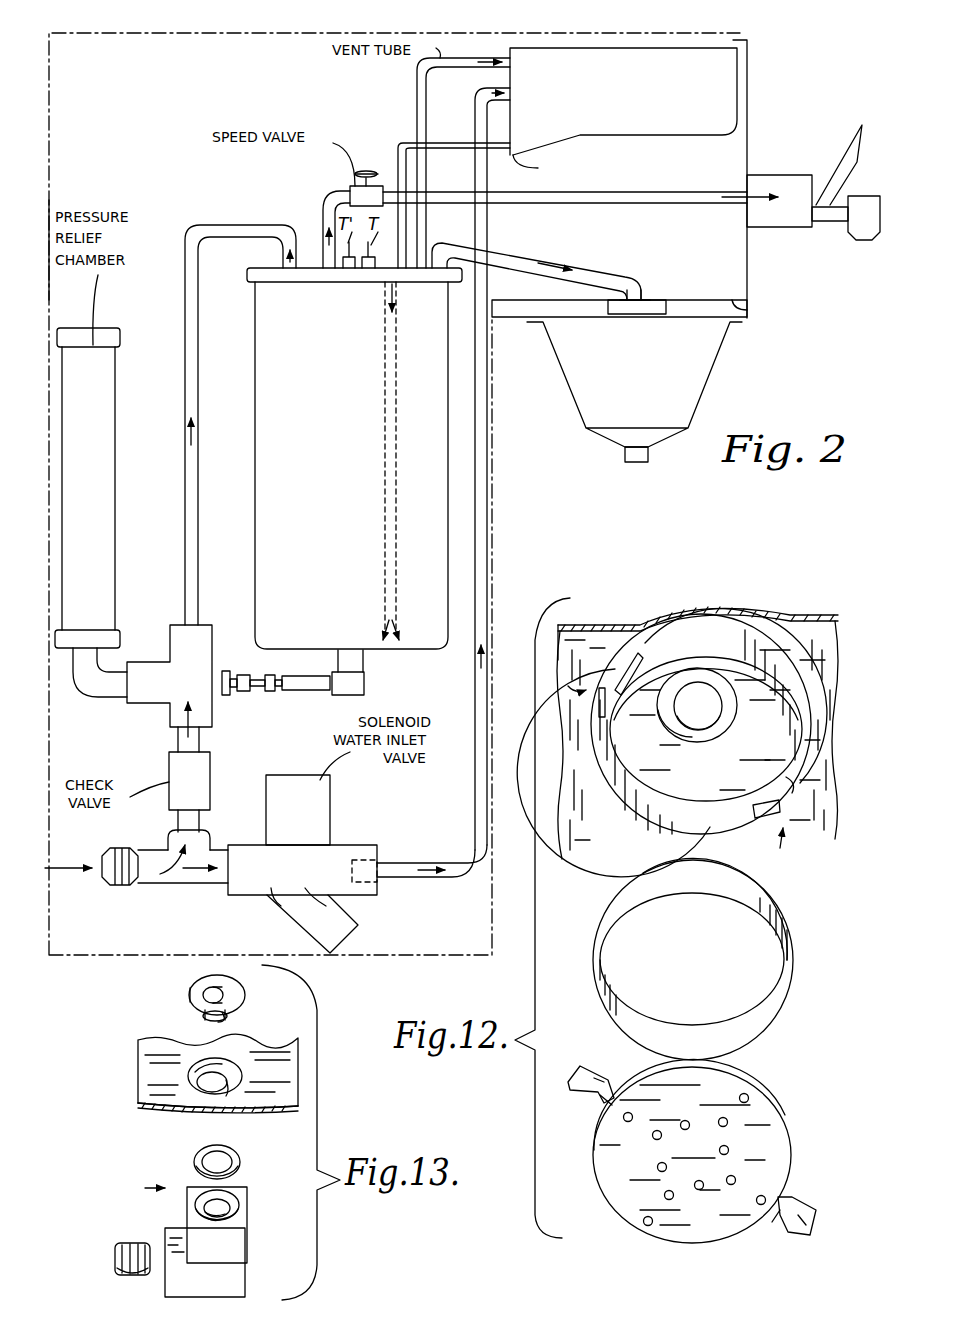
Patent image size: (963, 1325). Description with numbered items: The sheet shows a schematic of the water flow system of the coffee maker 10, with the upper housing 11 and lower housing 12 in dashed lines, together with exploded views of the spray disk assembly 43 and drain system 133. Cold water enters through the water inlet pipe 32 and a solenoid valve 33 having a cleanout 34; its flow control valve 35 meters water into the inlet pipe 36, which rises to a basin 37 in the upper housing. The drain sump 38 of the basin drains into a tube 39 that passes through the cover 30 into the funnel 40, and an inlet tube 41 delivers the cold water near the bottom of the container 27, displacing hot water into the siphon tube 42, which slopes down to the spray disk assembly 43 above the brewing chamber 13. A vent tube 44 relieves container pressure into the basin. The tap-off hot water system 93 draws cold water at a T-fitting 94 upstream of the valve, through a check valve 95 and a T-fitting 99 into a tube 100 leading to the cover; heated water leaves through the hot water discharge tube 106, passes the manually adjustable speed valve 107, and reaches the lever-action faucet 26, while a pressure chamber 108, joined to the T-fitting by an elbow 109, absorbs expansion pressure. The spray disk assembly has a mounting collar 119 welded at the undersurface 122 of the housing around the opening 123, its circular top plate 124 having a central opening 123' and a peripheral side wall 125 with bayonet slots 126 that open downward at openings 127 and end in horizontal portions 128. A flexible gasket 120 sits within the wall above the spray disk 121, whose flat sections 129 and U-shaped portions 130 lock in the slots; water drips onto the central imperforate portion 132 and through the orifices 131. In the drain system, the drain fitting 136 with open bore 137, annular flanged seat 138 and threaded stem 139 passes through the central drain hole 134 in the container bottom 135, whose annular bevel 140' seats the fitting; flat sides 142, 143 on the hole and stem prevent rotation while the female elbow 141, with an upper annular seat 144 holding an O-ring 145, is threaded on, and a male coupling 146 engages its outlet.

In FIG. 2, the coffee maker 10 is at (758, 118).
In FIG. 2, the upper housing 11 is at (49, 250).
In FIG. 12, the upper housing 11 is at (598, 624).
In FIG. 2, the lower housing 12 is at (496, 558).
In FIG. 2, the brewing chamber 13 is at (700, 380).
In FIG. 2, the lever-action faucet 26 is at (793, 175).
In FIG. 2, the hot water container 27 is at (326, 421).
In FIG. 13, the hot water container 27 is at (150, 1108).
In FIG. 2, the cover 30 is at (277, 282).
In FIG. 2, the water inlet pipe 32 is at (122, 887).
In FIG. 2, the solenoid valve 33 is at (330, 798).
In FIG. 2, the cleanout 34 is at (352, 920).
In FIG. 2, the internal flow control valve 35 is at (365, 858).
In FIG. 2, the inlet pipe 36 is at (488, 466).
In FIG. 2, the basin 37 is at (610, 46).
In FIG. 2, the drain sump 38 is at (530, 162).
In FIG. 2, the tube 39 is at (447, 141).
In FIG. 2, the funnel 40 is at (385, 290).
In FIG. 2, the inlet tube 41 is at (385, 548).
In FIG. 2, the siphon tube 42 is at (556, 262).
In FIG. 2, the spray disk assembly 43 is at (670, 296).
In FIG. 12, the spray disk assembly 43 is at (686, 590).
In FIG. 2, the vent tube 44 is at (417, 88).
In FIG. 2, the tap-off hot water system 93 is at (303, 200).
In FIG. 2, the T-fitting 94 is at (169, 838).
In FIG. 2, the check valve 95 is at (169, 765).
In FIG. 2, the T-fitting 99 is at (178, 632).
In FIG. 2, the tube 100 is at (185, 284).
In FIG. 2, the hot water discharge tube 106 is at (343, 198).
In FIG. 2, the speed valve 107 is at (368, 172).
In FIG. 2, the pressure chamber 108 is at (107, 465).
In FIG. 2, the elbow 109 is at (97, 688).
In FIG. 2, the mounting collar 119 is at (615, 313).
In FIG. 12, the mounting collar 119 is at (708, 628).
In FIG. 12, the flexible gasket 120 is at (796, 971).
In FIG. 12, the spray disk 121 is at (775, 1107).
In FIG. 2, the undersurface 122 is at (750, 308).
In FIG. 12, the undersurface 122 is at (808, 632).
In FIG. 2, the opening 123 is at (654, 272).
In FIG. 12, the opening 123 is at (682, 711).
In FIG. 12, the central opening 123' is at (705, 729).
In FIG. 12, the circular top plate 124 is at (775, 752).
In FIG. 12, the peripheral side wall 125 is at (790, 686).
In FIG. 12, the bayonet slots 126 is at (688, 763).
In FIG. 12, the downward openings 127 is at (609, 708).
In FIG. 12, the horizontal portions 128 is at (630, 664).
In FIG. 12, the flat sections 129 is at (608, 1110).
In FIG. 12, the U-shaped portions 130 is at (580, 1066).
In FIG. 12, the orifices 131 is at (640, 1170).
In FIG. 12, the central imperforate portion 132 is at (693, 1150).
In FIG. 2, the drain system 133 is at (336, 699).
In FIG. 13, the drain system 133 is at (132, 1190).
In FIG. 13, the central drain hole 134 is at (222, 1078).
In FIG. 13, the container bottom 135 is at (178, 1086).
In FIG. 13, the drain fitting 136 is at (195, 984).
In FIG. 13, the open bore 137 is at (225, 994).
In FIG. 13, the annular flanged seat 138 is at (190, 995).
In FIG. 13, the threaded stem 139 is at (205, 1017).
In FIG. 13, the annular bevel 140' is at (151, 1051).
In FIG. 13, the female elbow 141 is at (240, 1252).
In FIG. 13, the flat sides 142 is at (226, 1092).
In FIG. 13, the flat sides 143 is at (232, 1014).
In FIG. 13, the upper annular seat 144 is at (236, 1206).
In FIG. 13, the O-ring 145 is at (241, 1161).
In FIG. 13, the male coupling 146 is at (115, 1257).